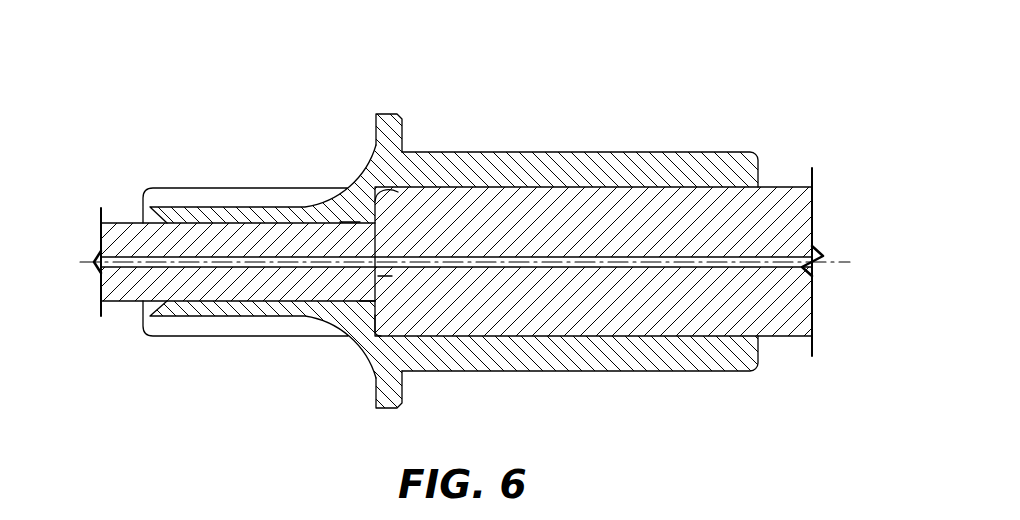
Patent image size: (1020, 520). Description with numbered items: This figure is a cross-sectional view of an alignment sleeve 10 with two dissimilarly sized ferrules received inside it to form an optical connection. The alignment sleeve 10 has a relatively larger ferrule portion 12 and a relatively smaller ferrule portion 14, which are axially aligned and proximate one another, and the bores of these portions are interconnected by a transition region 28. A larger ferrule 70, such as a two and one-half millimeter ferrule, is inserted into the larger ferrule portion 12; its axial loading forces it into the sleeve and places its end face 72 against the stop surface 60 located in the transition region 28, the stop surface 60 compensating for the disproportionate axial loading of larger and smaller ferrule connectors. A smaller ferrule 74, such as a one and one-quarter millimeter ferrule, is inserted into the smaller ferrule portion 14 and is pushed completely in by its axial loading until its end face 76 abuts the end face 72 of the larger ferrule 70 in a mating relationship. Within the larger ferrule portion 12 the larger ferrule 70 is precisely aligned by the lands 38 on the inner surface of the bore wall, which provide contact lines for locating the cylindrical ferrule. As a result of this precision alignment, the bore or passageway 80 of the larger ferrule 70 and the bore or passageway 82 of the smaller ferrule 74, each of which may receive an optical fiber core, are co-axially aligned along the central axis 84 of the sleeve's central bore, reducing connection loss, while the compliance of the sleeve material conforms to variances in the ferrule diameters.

The alignment sleeve 10 is at (632, 78).
The larger ferrule portion 12 is at (533, 138).
The smaller ferrule portion 14 is at (239, 172).
The transition region 28 is at (365, 309).
The lands 38 is at (745, 182).
The stop surface 60 is at (376, 191).
The larger ferrule 70 is at (790, 183).
The end face of the larger ferrule 72 is at (352, 218).
The smaller ferrule 74 is at (122, 305).
The end face of the smaller ferrule 76 is at (385, 278).
The bore or passageway of the larger ferrule 80 is at (790, 250).
The bore or passageway of the smaller ferrule 82 is at (118, 252).
The central axis 84 is at (843, 257).